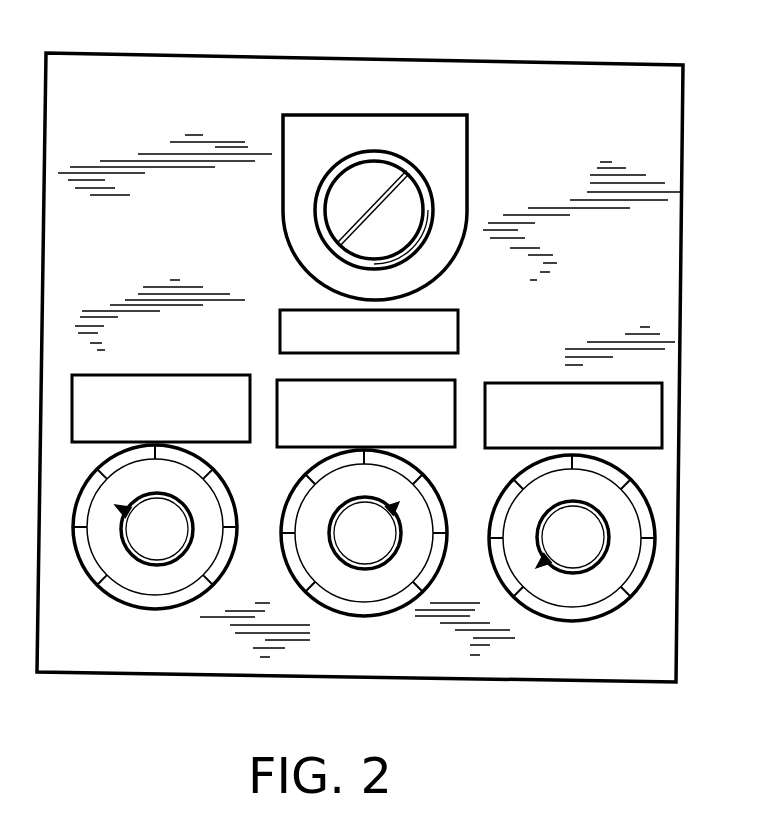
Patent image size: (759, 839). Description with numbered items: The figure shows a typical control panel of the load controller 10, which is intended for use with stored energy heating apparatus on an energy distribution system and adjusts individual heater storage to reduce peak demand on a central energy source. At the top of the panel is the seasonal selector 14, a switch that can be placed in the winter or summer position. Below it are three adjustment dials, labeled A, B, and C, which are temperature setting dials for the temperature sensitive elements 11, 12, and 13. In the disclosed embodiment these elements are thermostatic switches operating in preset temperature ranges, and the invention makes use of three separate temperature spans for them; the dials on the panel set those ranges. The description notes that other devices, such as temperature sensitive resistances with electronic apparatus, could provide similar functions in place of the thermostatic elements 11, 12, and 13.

The controller 10 is at (597, 56).
The temperature sensitive element 11 is at (227, 483).
The temperature sensitive element 12 is at (435, 491).
The temperature sensitive element 13 is at (632, 486).
The selector 14 is at (483, 173).